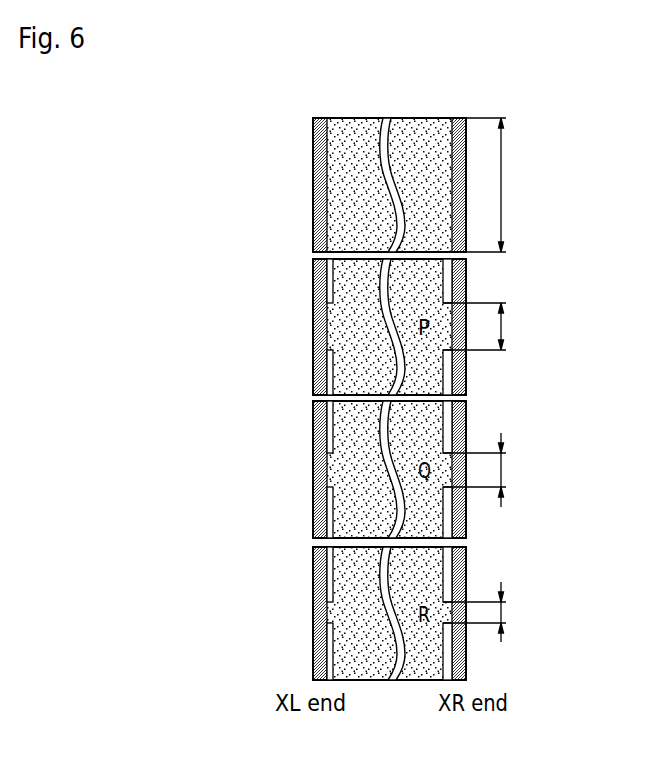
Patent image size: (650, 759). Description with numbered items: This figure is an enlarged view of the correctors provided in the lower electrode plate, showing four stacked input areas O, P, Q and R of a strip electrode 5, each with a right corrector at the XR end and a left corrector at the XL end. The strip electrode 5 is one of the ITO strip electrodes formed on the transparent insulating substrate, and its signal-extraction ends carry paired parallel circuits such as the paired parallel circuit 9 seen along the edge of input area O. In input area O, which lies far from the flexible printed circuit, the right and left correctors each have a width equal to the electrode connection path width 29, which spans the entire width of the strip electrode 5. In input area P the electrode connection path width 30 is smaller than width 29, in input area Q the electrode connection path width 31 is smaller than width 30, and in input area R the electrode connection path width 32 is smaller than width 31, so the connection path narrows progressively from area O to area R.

The strip electrode 5 is at (405, 158).
The paired parallel circuit 9 is at (466, 160).
The width L29 of electrode connection path 29 is at (507, 185).
The width L30 of electrode connection path 30 is at (495, 326).
The width L31 of electrode connection path 31 is at (495, 470).
The width L32 of electrode connection path 32 is at (495, 612).